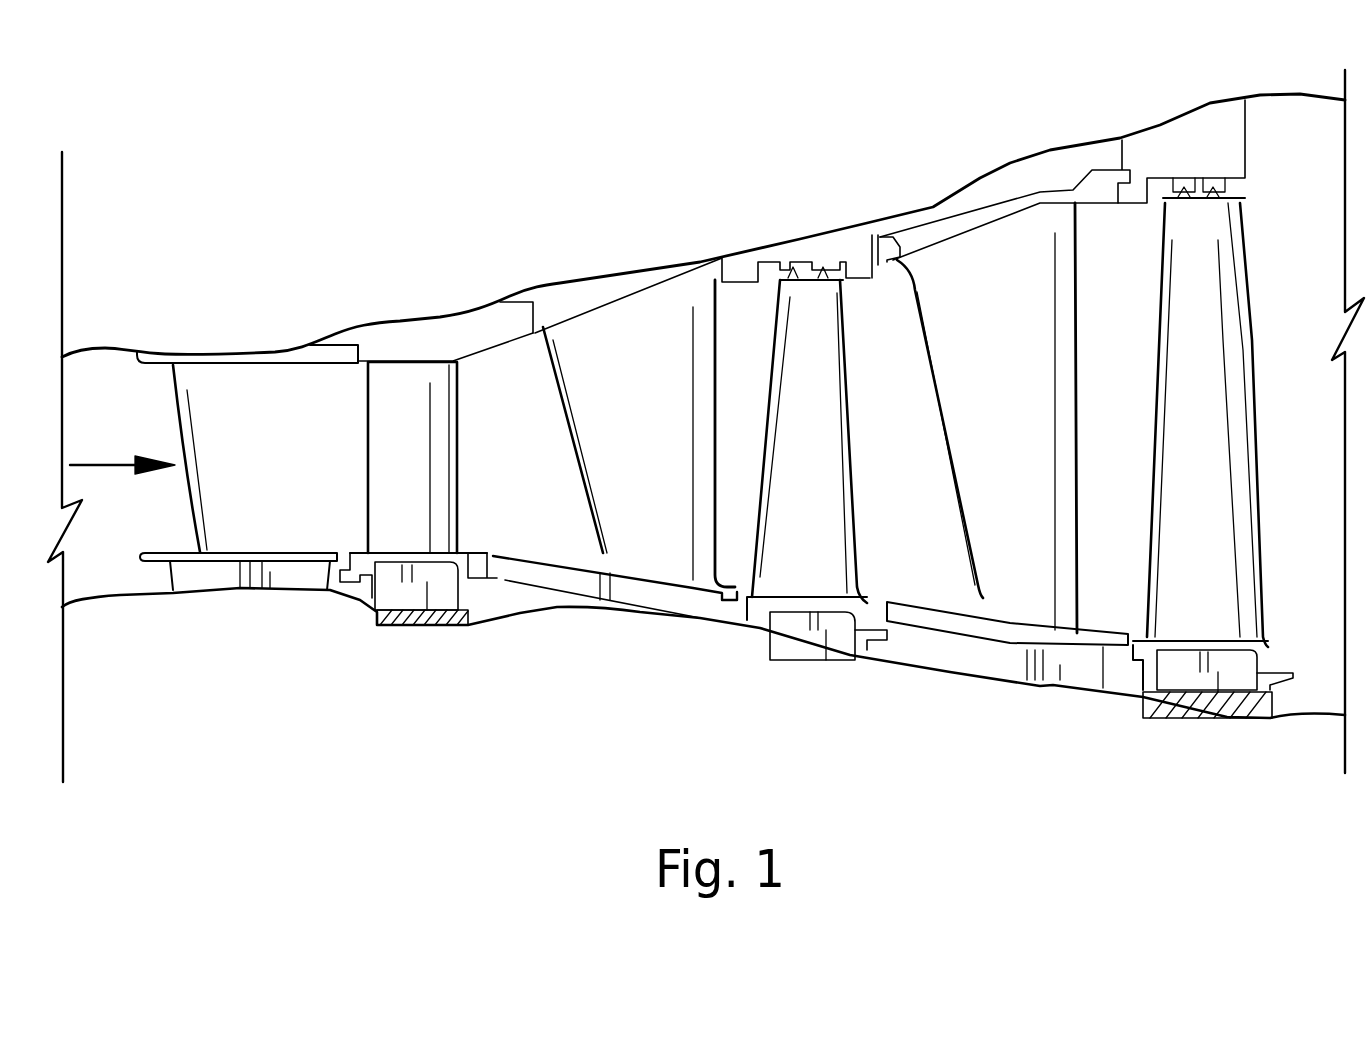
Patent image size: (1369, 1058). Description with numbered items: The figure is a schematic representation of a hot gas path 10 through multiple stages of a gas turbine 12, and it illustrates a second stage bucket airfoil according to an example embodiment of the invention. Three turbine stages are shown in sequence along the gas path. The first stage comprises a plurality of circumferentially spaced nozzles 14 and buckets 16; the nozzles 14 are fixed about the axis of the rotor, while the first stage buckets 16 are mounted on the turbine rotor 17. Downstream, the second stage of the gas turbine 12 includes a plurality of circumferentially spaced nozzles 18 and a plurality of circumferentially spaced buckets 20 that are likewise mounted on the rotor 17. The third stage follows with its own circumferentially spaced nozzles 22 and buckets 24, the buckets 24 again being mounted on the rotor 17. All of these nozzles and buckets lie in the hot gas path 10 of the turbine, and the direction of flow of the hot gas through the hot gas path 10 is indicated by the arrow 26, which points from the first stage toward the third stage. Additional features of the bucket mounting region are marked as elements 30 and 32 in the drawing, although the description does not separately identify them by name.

The hot gas path 10 is at (541, 379).
The gas turbine 12 is at (638, 282).
The first stage nozzles 14 is at (270, 463).
The first stage buckets 16 is at (418, 507).
The turbine rotor 17 is at (423, 617).
The second stage nozzles 18 is at (660, 442).
The second stage buckets 20 is at (820, 453).
The third stage nozzles 22 is at (1032, 437).
The third stage buckets 24 is at (1217, 470).
The arrow 26 is at (110, 465).
The blade platform 30 is at (808, 605).
The blade root 32 is at (832, 637).